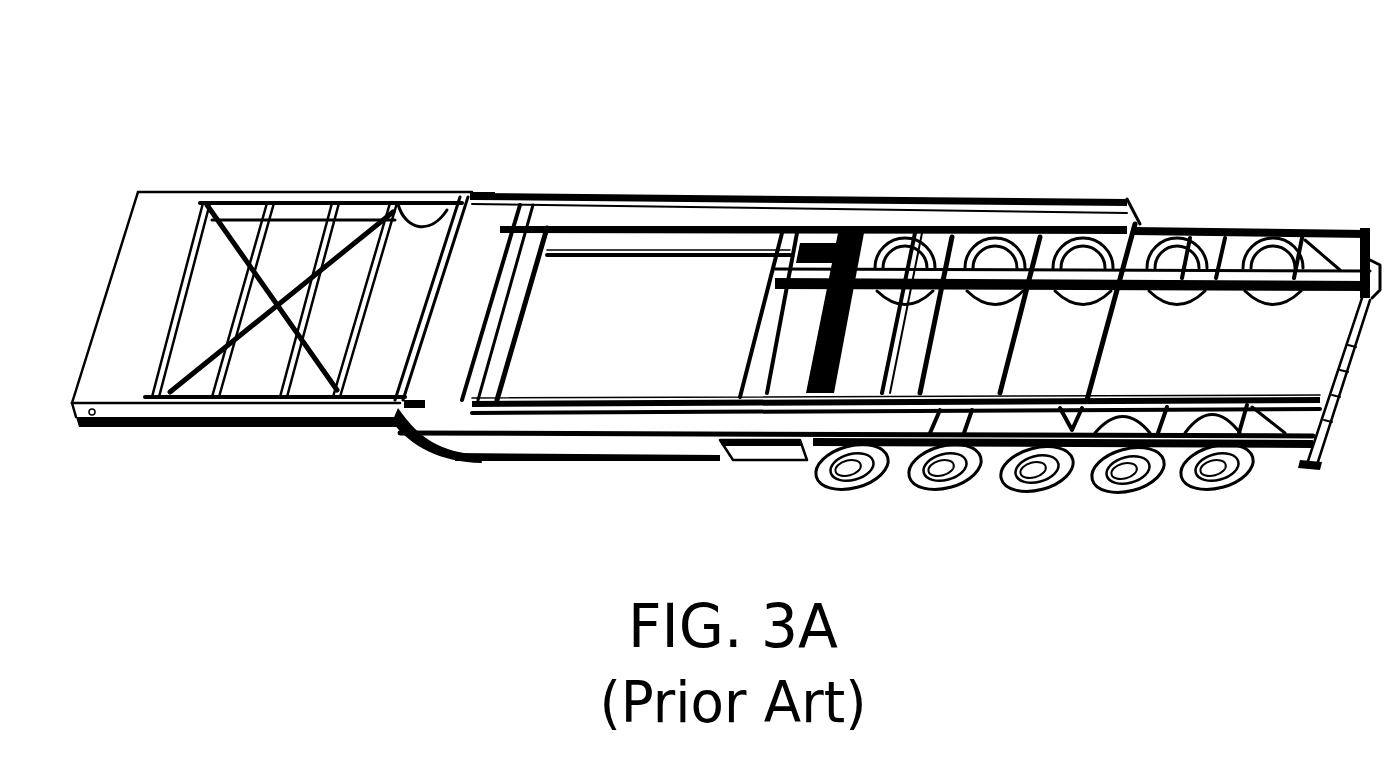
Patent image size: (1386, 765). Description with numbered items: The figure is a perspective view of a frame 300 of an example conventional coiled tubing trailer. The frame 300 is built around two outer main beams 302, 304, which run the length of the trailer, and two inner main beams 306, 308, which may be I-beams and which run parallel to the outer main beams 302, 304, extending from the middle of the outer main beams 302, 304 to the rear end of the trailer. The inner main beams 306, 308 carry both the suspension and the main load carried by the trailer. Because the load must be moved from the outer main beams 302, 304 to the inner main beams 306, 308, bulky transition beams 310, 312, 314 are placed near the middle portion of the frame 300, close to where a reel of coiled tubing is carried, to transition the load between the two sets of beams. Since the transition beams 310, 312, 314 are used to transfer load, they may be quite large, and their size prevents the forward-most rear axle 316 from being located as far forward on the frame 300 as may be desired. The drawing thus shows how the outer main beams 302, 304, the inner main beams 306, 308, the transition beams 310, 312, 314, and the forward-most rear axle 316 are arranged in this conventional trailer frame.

The frame 300 is at (1068, 58).
The outer main beam 302 is at (622, 430).
The outer main beam 304 is at (828, 195).
The inner main beam 306 is at (1153, 402).
The inner main beam 308 is at (1134, 230).
The transition beam 310 is at (753, 462).
The transition beam 312 is at (818, 336).
The transition beam 314 is at (790, 252).
The forward-most rear axle 316 is at (857, 470).